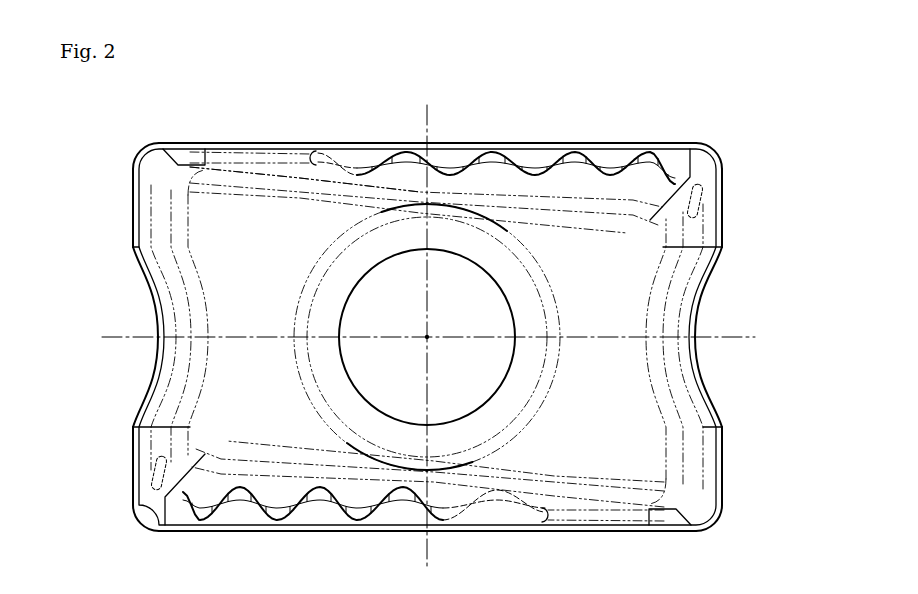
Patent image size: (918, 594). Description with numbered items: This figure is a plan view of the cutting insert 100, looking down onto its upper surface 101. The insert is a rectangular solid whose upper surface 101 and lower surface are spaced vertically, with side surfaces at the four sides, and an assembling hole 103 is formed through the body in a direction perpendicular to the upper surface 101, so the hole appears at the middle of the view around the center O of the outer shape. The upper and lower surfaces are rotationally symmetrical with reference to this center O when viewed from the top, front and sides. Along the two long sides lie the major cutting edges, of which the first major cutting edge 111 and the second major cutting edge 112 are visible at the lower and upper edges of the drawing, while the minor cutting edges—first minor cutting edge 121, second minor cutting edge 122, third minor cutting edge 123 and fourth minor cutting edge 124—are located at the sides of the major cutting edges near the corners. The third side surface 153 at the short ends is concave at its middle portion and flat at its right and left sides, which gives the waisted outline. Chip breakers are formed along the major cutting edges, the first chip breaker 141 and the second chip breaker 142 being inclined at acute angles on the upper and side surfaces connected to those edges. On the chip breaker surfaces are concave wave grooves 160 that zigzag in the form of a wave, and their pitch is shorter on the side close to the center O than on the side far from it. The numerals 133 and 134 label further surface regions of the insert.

The cutting insert 100 is at (565, 106).
The upper surface 101 is at (278, 222).
The assembling hole 103 is at (373, 298).
The first major cutting edge 111 is at (207, 535).
The second major cutting edge 112 is at (660, 142).
The first minor cutting edge 121 is at (137, 523).
The second minor cutting edge 122 is at (707, 142).
The third minor cutting edge 123 is at (135, 160).
The fourth minor cutting edge 124 is at (720, 517).
The left short side surface 133 is at (150, 212).
The right short side surface 134 is at (722, 480).
The first chip breaker 141 is at (322, 515).
The second chip breaker 142 is at (452, 158).
The third side surface 153 is at (157, 312).
The wave grooves 160 is at (475, 503).
The center O is at (427, 337).